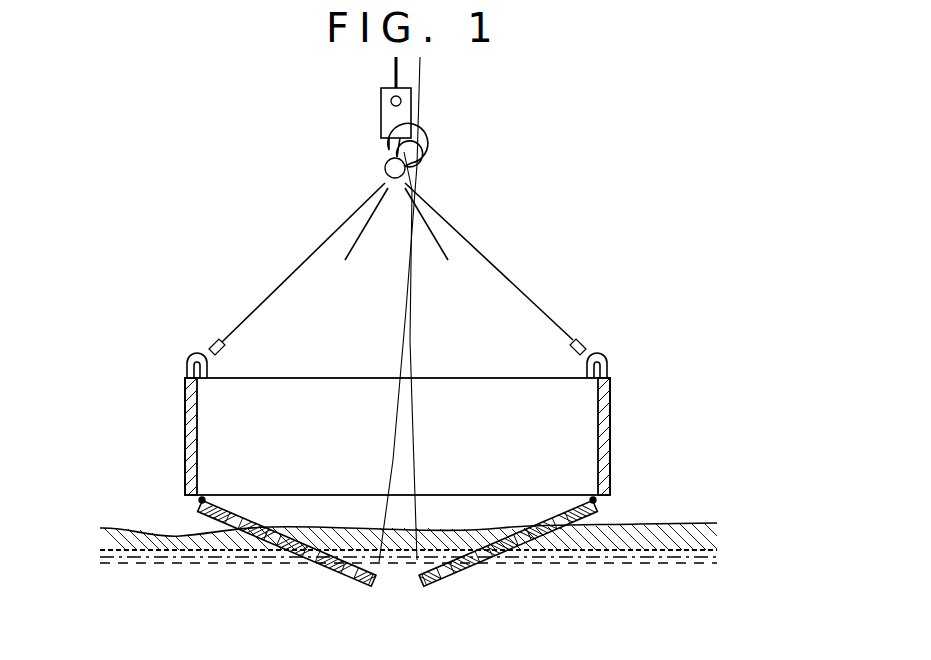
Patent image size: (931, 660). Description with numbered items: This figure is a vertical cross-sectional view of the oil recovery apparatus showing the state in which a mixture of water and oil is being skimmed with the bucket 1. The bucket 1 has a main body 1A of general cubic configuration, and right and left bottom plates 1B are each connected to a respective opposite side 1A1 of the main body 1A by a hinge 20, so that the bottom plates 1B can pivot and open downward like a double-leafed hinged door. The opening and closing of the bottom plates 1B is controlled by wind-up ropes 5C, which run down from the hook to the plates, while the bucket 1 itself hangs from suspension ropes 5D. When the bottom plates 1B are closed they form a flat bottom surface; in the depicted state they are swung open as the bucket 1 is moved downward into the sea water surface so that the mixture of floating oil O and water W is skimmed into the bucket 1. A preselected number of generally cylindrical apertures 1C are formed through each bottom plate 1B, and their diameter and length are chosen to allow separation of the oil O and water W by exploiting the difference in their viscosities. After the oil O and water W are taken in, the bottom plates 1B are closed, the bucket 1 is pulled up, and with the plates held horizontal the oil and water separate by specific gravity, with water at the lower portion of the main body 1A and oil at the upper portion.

The bucket 1 is at (395, 492).
The main body 1A is at (603, 397).
The opposite side 1A1 is at (190, 398).
The bottom plate 1B is at (350, 578).
The aperture 1C is at (217, 522).
The hinge 20 is at (204, 497).
The wind-up rope 5C is at (408, 288).
The suspension rope 5D is at (443, 208).
The oil O is at (700, 523).
The water W is at (715, 556).